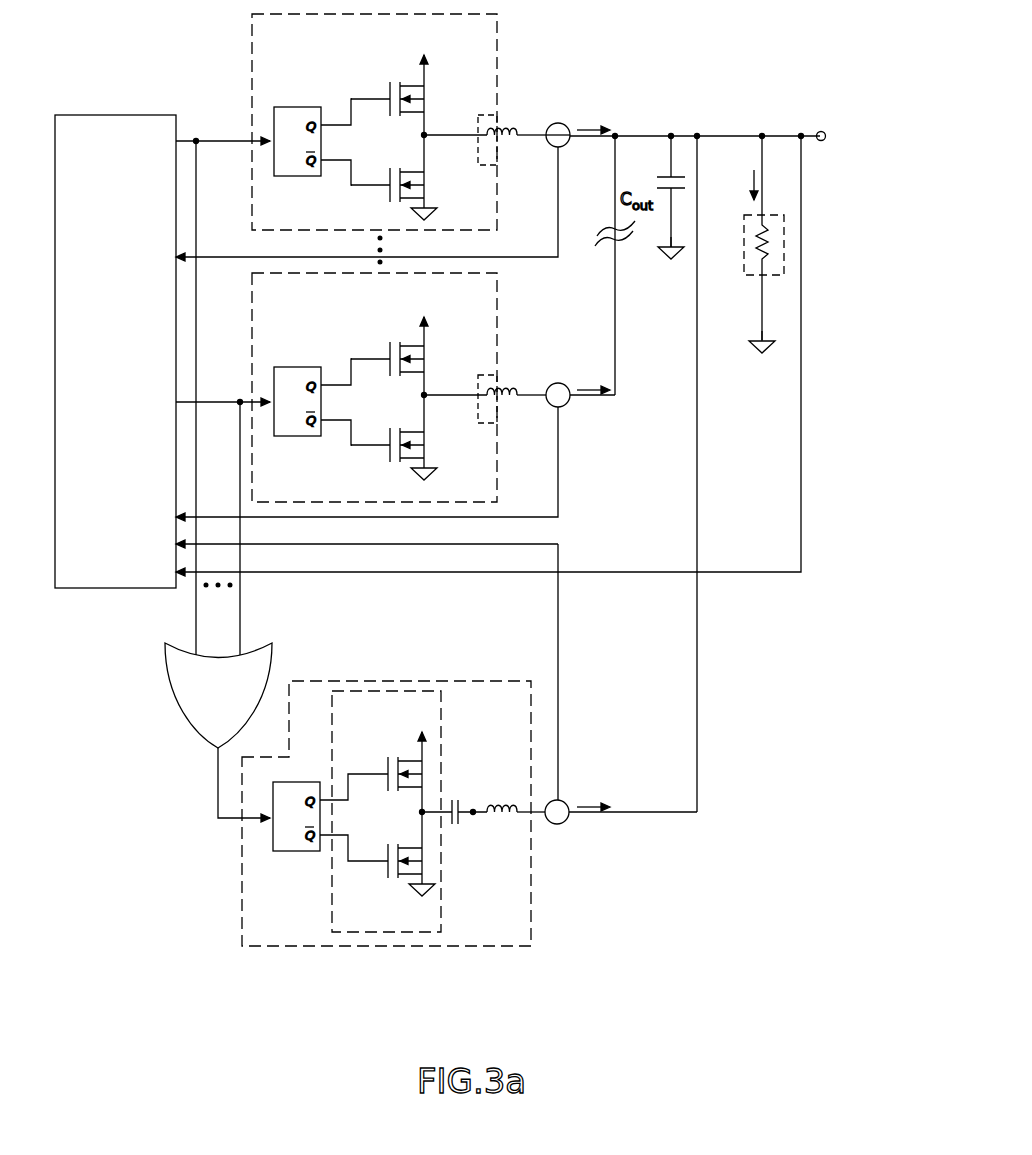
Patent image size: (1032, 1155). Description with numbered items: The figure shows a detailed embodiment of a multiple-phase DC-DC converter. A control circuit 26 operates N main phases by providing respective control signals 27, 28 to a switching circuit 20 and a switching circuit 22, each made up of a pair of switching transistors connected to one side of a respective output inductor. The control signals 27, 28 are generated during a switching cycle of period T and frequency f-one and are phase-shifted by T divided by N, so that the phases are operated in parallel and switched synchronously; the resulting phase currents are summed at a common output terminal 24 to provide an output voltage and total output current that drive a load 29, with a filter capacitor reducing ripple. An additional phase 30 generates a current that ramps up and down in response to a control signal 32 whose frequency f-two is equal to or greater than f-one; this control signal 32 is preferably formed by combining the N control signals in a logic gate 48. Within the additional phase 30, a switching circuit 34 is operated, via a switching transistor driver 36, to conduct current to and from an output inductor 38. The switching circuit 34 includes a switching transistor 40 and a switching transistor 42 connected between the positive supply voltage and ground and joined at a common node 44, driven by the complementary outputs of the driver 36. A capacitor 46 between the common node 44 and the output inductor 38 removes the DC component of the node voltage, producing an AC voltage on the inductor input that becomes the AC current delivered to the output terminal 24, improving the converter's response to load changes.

The switching circuit 20 is at (497, 33).
The switching circuit 22 is at (497, 330).
The common output terminal 24 is at (618, 133).
The control circuit 26 is at (115, 115).
The control signal 27 is at (235, 138).
The control signal 28 is at (232, 398).
The load 29 is at (755, 275).
The additional phase 30 is at (469, 843).
The control signal 32 is at (218, 787).
The switching circuit 34 is at (420, 811).
The switching transistor driver 36 is at (300, 853).
The output inductor 38 is at (495, 797).
The switching transistor 40 is at (412, 750).
The switching transistor 42 is at (406, 887).
The common node 44 is at (425, 812).
The capacitor 46 is at (455, 799).
The logic gate 48 is at (163, 677).